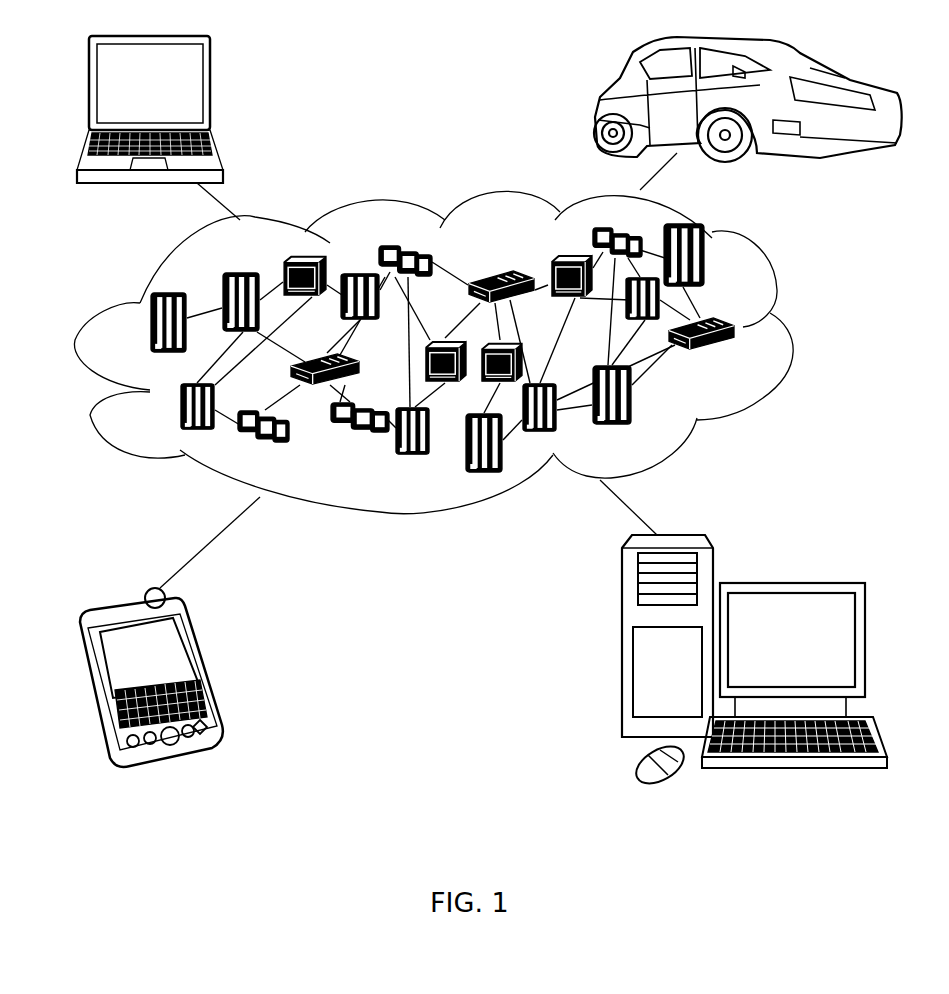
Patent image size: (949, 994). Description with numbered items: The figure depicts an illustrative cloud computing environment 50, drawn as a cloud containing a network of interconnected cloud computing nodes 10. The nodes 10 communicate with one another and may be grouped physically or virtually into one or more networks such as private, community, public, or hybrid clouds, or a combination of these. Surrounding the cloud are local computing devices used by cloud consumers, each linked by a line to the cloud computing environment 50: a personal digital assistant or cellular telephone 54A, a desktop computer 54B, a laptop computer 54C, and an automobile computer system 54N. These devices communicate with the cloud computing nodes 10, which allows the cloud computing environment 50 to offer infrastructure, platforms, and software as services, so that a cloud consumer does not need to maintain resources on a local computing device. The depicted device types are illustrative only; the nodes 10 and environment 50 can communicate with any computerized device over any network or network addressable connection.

The cloud computing node 10 is at (762, 359).
The cloud computing environment 50 is at (787, 328).
The personal digital assistant or cellular telephone 54A is at (203, 668).
The desktop computer 54B is at (790, 582).
The laptop computer 54C is at (212, 86).
The automobile computer system 54N is at (598, 106).